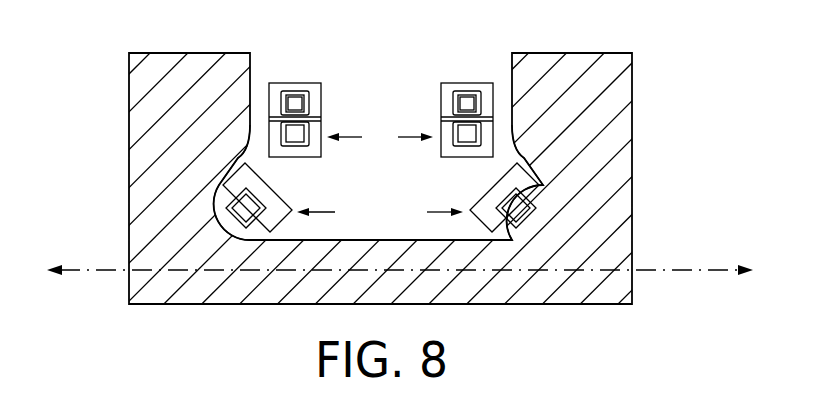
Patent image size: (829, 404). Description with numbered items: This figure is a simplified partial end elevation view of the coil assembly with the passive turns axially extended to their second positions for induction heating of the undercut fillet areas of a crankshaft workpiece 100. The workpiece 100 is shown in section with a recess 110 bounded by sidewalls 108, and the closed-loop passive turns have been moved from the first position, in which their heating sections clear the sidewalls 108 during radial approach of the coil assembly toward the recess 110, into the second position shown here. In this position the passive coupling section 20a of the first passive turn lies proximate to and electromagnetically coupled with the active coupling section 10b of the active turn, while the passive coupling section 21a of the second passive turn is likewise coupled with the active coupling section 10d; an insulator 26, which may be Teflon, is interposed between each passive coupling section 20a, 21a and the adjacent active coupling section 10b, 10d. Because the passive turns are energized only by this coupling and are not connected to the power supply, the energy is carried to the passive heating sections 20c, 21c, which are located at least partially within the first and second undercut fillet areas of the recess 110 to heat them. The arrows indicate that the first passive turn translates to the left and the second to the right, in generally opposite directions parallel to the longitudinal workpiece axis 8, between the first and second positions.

The workpiece 100 is at (129, 101).
The sidewalls 108 is at (250, 63).
The workpiece recess 110 is at (270, 47).
The passive coupling section 20a is at (302, 150).
The passive coupling section 21a is at (462, 150).
The active coupling section 10b is at (310, 100).
The active coupling section 10d is at (452, 100).
The insulator 26 is at (442, 118).
The passive heating section 20c is at (268, 205).
The passive heating section 21c is at (496, 205).
The longitudinal workpiece axis 8 is at (108, 270).